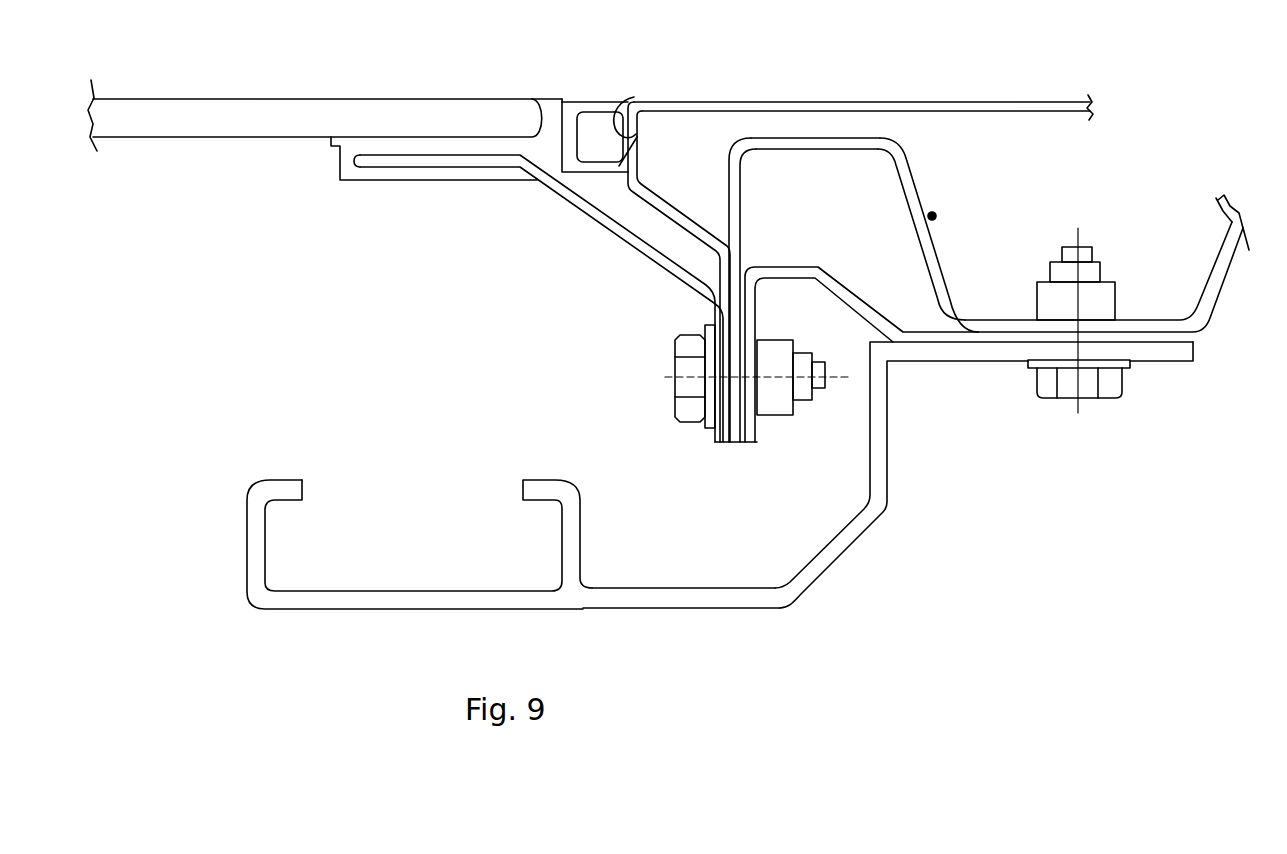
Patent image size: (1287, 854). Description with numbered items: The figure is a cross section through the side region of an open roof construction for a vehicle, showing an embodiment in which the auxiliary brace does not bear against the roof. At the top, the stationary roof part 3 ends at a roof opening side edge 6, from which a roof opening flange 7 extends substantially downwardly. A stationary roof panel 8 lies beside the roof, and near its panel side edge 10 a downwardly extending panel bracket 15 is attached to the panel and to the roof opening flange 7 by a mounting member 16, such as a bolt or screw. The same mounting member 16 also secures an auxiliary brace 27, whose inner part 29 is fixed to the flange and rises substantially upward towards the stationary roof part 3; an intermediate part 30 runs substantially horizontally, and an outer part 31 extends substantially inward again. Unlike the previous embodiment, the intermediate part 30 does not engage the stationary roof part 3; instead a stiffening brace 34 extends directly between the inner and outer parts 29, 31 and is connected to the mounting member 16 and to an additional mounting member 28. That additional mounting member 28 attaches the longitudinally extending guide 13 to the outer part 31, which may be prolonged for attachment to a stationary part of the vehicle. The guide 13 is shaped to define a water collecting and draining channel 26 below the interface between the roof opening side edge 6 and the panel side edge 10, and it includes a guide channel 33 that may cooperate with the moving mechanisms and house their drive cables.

The stationary roof part 3 is at (910, 102).
The roof opening side edge 6 is at (616, 124).
The roof opening flange 7 is at (665, 213).
The stationary roof panel 8 is at (346, 112).
The panel side edge 10 is at (566, 128).
The guide 13 is at (845, 550).
The panel bracket 15 is at (590, 213).
The mounting member 16 is at (684, 388).
The water collecting and draining channel 26 is at (703, 588).
The auxiliary brace 27 is at (936, 215).
The additional mounting member 28 is at (1088, 388).
The inner part 29 is at (735, 222).
The intermediate part 30 is at (832, 150).
The outer part 31 is at (1147, 320).
The guide channel 33 is at (423, 580).
The stiffening brace 34 is at (856, 300).